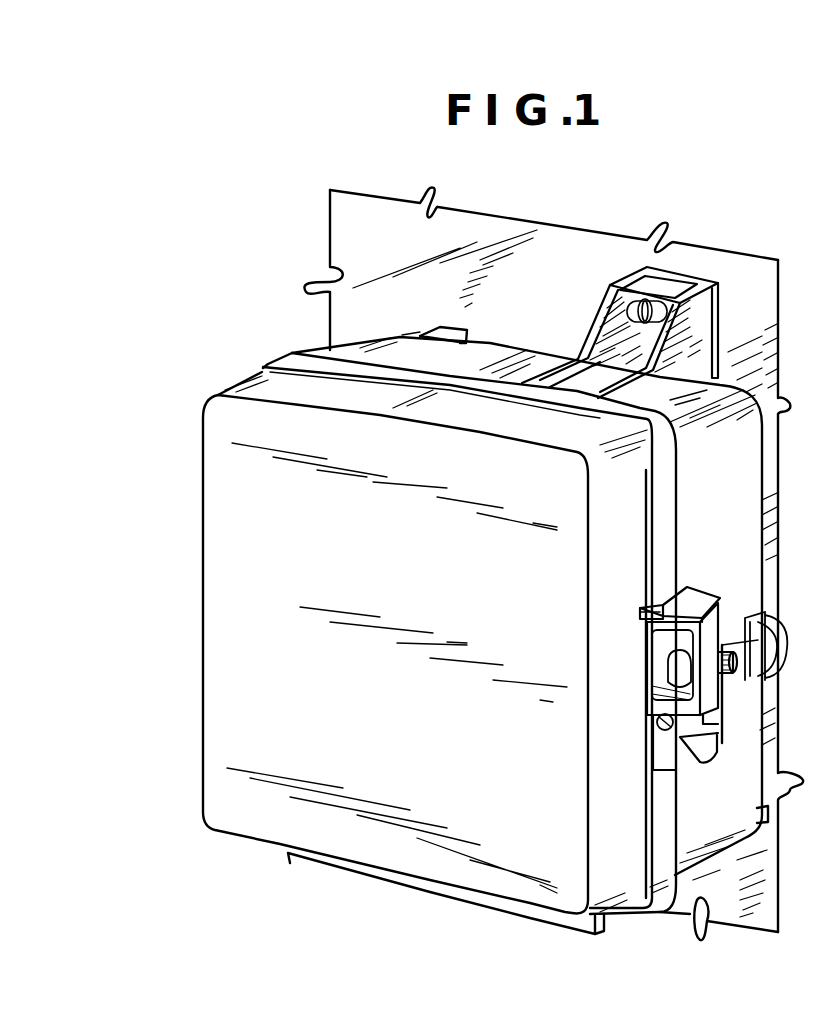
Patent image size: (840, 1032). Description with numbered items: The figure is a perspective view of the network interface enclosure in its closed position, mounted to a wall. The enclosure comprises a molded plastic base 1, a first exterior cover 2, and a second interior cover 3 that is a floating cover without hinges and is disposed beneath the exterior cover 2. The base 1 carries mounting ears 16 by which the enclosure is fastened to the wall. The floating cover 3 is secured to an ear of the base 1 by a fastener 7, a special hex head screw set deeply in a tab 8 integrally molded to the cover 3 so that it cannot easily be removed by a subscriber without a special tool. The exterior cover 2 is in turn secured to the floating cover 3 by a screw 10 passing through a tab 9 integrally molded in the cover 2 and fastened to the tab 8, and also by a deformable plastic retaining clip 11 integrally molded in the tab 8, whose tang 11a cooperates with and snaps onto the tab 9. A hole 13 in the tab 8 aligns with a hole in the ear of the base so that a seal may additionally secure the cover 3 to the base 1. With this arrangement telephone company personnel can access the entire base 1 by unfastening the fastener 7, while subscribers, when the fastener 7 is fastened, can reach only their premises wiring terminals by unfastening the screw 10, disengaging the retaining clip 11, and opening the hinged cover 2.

The base 1 is at (727, 421).
The first exterior cover 2 is at (260, 797).
The second interior cover 3 is at (182, 565).
The fastener 7 is at (652, 664).
The tab 8 is at (742, 682).
The tab 9 is at (703, 655).
The screw 10 is at (655, 720).
The deformable plastic retaining clip 11 is at (663, 606).
The tang 11a is at (650, 623).
The hole 13 is at (755, 678).
The mounting ears 16 is at (720, 288).